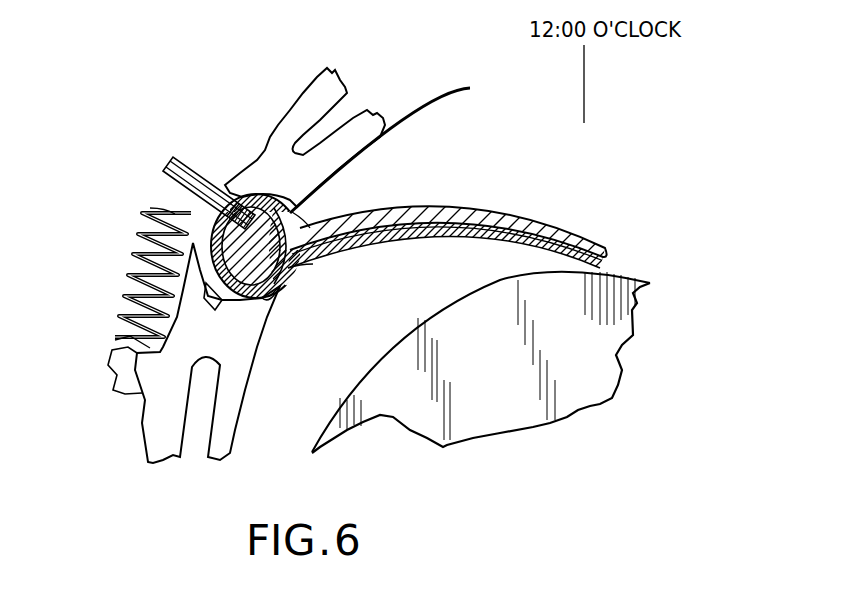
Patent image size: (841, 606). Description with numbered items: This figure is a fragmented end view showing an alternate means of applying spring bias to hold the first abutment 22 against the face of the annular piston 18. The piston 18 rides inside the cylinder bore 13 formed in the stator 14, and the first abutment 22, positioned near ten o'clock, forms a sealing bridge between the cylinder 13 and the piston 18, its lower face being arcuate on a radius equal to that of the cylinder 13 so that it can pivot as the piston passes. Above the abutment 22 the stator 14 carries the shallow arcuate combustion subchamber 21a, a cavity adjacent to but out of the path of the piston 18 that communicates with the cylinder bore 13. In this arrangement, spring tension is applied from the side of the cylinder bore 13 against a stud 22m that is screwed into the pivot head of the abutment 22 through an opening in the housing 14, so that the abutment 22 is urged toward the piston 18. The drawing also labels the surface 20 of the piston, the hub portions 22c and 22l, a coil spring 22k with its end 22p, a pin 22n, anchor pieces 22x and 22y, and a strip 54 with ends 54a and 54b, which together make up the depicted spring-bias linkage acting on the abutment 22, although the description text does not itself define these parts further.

The cylinder bore 13 is at (237, 422).
The stator 14 is at (278, 130).
The annular piston 18 is at (481, 362).
The tire surface 20 is at (481, 362).
The combustion subchamber 21a is at (440, 100).
The first abutment 22 is at (420, 207).
The hub lower portion 22c is at (278, 302).
The spring 22k is at (147, 227).
The hub tab 22l is at (216, 289).
The stud 22m is at (222, 175).
The pin 22n is at (190, 164).
The spring end 22p is at (148, 210).
The spring anchor 22x is at (110, 363).
The anchor tab 22y is at (137, 393).
The strip 54 is at (465, 227).
The strip end 54a is at (302, 213).
The strip end 54b is at (303, 278).